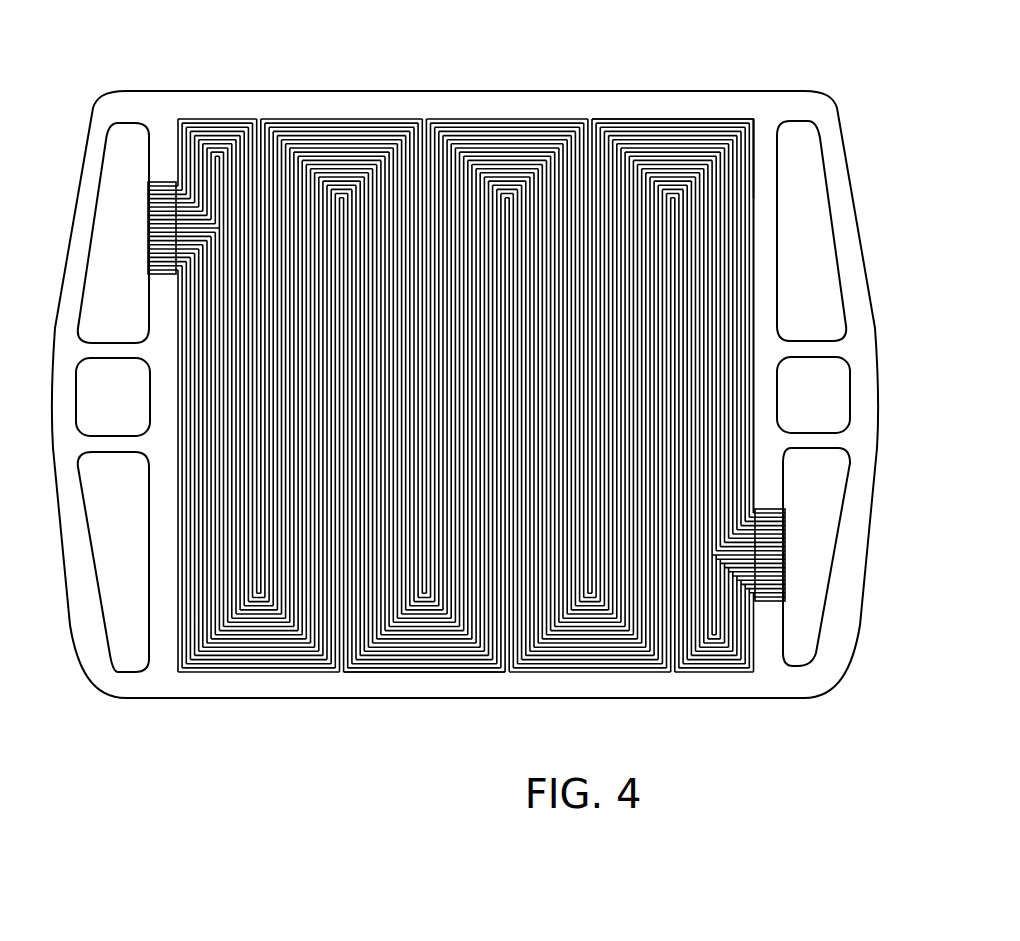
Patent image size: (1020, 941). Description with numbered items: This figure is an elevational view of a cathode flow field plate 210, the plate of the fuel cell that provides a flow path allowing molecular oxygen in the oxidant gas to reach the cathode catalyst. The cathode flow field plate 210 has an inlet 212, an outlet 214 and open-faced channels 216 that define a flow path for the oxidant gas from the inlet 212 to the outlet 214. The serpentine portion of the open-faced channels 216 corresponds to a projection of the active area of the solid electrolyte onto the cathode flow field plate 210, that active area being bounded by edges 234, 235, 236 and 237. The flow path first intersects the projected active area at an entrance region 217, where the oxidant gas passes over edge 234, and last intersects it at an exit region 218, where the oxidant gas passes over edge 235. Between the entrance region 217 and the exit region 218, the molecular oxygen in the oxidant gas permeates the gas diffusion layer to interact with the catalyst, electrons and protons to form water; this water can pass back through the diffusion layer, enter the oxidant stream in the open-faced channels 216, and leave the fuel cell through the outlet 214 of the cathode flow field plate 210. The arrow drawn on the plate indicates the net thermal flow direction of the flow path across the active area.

The cathode flow field plate 210 is at (272, 716).
The inlet 212 is at (808, 582).
The outlet 214 is at (103, 178).
The open-faced channels 216 is at (520, 123).
The entrance region 217 is at (777, 593).
The exit region 218 is at (152, 178).
The edge 234 is at (746, 182).
The edge 235 is at (170, 527).
The edge 236 is at (413, 668).
The edge 237 is at (638, 110).